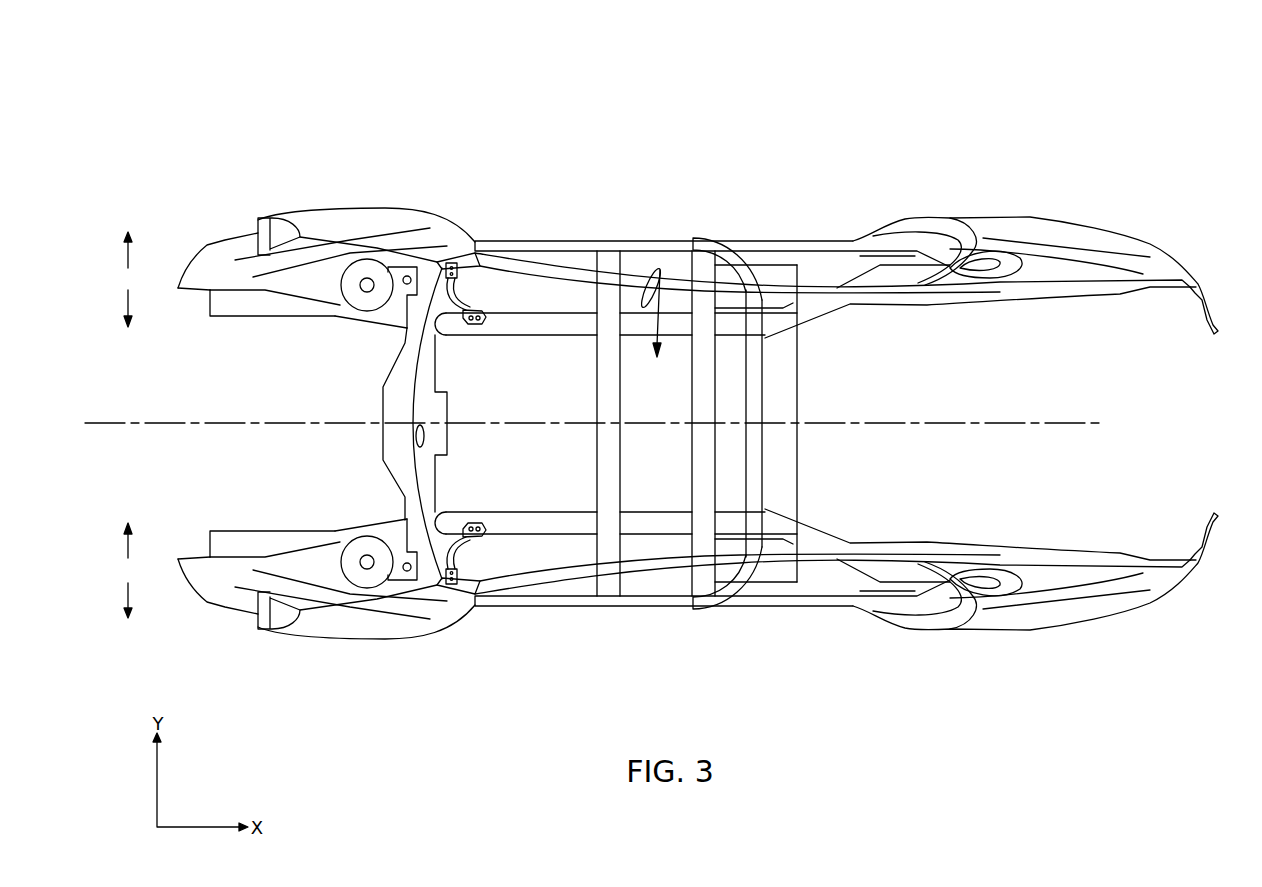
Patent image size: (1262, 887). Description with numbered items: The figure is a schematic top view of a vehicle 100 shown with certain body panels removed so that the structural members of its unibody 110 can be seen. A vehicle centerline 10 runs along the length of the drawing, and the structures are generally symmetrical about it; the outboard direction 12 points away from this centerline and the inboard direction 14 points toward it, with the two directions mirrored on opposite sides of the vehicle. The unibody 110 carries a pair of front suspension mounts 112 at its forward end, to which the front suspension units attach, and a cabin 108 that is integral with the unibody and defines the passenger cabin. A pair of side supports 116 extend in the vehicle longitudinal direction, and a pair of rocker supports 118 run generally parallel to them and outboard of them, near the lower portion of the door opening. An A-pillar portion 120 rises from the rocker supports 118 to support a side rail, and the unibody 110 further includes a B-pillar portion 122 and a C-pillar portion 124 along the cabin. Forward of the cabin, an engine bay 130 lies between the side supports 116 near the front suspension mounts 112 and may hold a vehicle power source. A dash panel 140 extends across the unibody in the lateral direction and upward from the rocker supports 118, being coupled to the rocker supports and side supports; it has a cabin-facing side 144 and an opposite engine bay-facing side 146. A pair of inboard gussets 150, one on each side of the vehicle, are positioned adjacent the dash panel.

The vehicle centerline 10 is at (130, 422).
The outboard direction 12 is at (128, 260).
The inboard direction 14 is at (128, 294).
The vehicle 100 is at (840, 124).
The cabin 108 is at (643, 300).
The unibody 110 is at (909, 191).
The front suspension mounts 112 is at (368, 260).
The side supports 116 is at (223, 318).
The rocker supports 118 is at (562, 242).
The A-pillar portion 120 is at (468, 250).
The B-pillar portion 122 is at (730, 240).
The C-pillar portion 124 is at (930, 215).
The engine bay 130 is at (260, 333).
The dash panel 140 is at (378, 373).
The cabin-facing side 144 is at (426, 401).
The engine bay-facing side 146 is at (385, 480).
The inboard gussets 150 is at (476, 330).